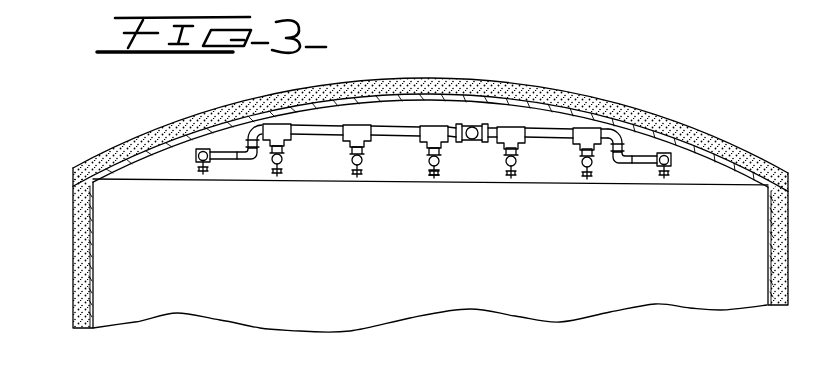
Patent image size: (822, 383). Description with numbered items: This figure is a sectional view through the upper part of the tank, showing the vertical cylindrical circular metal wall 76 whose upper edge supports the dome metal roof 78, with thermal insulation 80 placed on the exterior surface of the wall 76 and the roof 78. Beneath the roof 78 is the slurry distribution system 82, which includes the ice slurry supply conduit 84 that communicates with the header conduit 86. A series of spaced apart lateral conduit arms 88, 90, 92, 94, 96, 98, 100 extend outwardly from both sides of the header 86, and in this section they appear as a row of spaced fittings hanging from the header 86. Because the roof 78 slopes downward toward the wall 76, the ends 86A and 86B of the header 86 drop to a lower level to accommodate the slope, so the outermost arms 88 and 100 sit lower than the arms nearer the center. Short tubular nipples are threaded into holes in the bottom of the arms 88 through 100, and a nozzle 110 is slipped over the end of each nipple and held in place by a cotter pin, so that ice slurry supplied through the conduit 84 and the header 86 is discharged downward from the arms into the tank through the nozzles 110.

The wall 76 is at (87, 273).
The dome metal roof 78 is at (160, 140).
The thermal insulation 80 is at (600, 102).
The slurry distribution system 82 is at (398, 119).
The ice slurry supply conduit 84 is at (468, 147).
The header conduit 86 is at (317, 133).
The end of header 86A is at (640, 166).
The end of header 86B is at (221, 158).
The lateral conduit arm 88 is at (667, 162).
The lateral conduit arm 90 is at (592, 162).
The lateral conduit arm 92 is at (508, 163).
The lateral conduit arm 94 is at (428, 155).
The lateral conduit arm 96 is at (363, 161).
The lateral conduit arm 98 is at (270, 165).
The lateral conduit arm 100 is at (195, 156).
The nozzle 110 is at (435, 180).